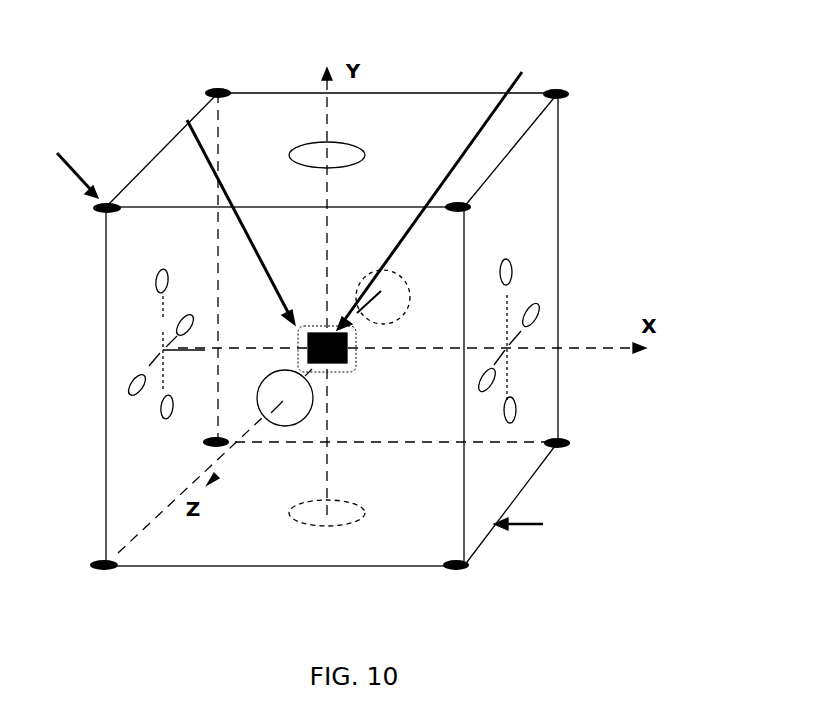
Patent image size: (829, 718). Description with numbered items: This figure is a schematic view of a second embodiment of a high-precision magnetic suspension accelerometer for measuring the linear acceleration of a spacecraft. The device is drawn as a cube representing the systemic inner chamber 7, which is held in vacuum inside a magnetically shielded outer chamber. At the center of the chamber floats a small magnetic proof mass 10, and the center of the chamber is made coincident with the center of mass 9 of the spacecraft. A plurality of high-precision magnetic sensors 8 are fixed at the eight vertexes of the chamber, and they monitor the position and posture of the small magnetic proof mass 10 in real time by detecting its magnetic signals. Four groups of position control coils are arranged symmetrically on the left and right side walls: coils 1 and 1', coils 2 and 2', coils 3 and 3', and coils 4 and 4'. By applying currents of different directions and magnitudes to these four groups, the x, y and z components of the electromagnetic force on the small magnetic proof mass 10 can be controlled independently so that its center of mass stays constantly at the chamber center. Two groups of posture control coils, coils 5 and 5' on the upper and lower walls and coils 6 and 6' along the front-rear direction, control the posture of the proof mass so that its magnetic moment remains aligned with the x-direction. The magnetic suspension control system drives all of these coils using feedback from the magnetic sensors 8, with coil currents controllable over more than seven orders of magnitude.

The position control coil 1 is at (157, 266).
The position control coil 2 is at (142, 362).
The position control coil 3 is at (158, 422).
The position control coil 4 is at (182, 345).
The posture control coil 5 is at (342, 153).
The posture control coil 6 is at (285, 417).
The systemic inner chamber 7 is at (530, 526).
The high-precision magnetic sensor 8 is at (67, 165).
The center of mass 9 is at (230, 208).
The small magnetic proof mass 10 is at (446, 190).
The position control coil 1' is at (498, 257).
The position control coil 2' is at (490, 389).
The position control coil 3' is at (520, 402).
The position control coil 4' is at (527, 308).
The posture control coil 5' is at (345, 513).
The posture control coil 6' is at (388, 285).